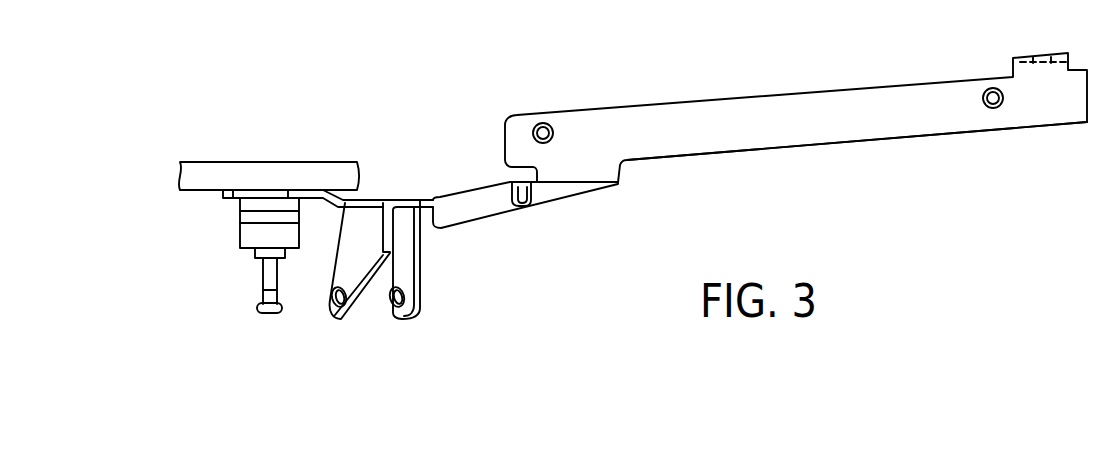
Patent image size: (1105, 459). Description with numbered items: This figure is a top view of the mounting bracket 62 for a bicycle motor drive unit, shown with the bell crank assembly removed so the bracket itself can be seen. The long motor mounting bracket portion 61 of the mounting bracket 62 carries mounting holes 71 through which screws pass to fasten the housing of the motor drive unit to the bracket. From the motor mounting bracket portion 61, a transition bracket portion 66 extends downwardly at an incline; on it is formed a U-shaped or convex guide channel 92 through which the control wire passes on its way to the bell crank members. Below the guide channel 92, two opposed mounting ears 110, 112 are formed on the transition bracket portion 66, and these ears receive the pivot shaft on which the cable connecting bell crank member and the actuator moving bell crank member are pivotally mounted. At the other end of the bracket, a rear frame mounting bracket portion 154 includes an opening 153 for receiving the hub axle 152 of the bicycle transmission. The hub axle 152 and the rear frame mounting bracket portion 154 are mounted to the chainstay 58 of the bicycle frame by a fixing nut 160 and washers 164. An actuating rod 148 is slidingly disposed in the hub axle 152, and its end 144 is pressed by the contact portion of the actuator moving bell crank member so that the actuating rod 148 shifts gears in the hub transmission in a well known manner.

The chainstay 58 is at (302, 170).
The motor mounting bracket portion 61 is at (658, 117).
The mounting bracket 62 is at (737, 154).
The transition bracket portion 66 is at (565, 200).
The mounting holes 71 is at (547, 122).
The guide channel 92 is at (481, 212).
The mounting ear 110 is at (330, 321).
The mounting ear 112 is at (408, 318).
The end of actuating rod 144 is at (270, 318).
The actuating rod 148 is at (262, 283).
The hub axle 152 is at (252, 251).
The opening 153 is at (250, 193).
The rear frame mounting bracket portion 154 is at (231, 193).
The fixing nut 160 is at (248, 230).
The washers 164 is at (248, 213).